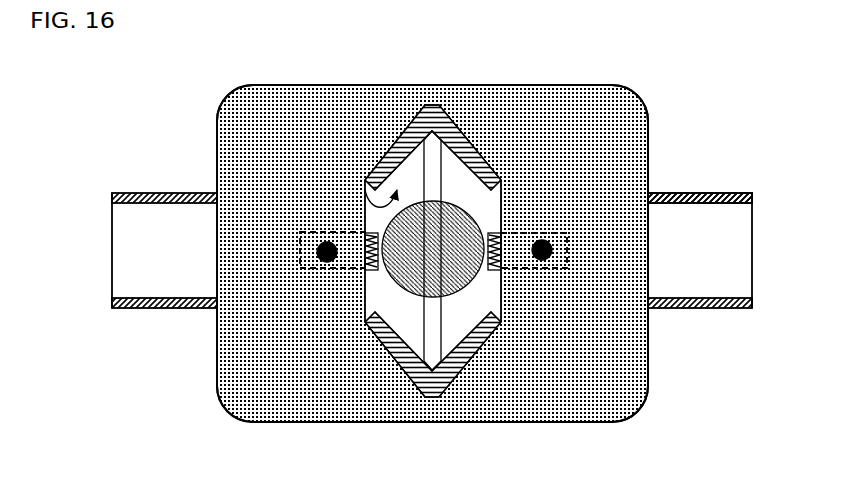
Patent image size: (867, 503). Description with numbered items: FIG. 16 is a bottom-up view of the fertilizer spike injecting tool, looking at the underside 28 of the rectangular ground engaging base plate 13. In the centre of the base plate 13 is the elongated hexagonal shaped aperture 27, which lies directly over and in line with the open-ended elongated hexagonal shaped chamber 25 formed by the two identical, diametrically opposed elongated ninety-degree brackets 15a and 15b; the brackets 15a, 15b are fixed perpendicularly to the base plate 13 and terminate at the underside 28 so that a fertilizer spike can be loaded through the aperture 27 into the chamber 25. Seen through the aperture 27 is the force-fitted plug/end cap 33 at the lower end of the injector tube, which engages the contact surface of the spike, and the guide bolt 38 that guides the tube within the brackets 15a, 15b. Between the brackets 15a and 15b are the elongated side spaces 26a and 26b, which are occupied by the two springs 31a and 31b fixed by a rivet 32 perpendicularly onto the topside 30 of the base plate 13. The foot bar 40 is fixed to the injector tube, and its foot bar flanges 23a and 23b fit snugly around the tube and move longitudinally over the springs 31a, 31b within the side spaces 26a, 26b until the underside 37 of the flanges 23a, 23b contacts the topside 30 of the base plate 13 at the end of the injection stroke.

The base plate 13 is at (357, 82).
The underside of base plate 28 is at (585, 106).
The foot bar flange 23a is at (110, 198).
The foot bar flange 23b is at (756, 198).
The underside of foot bar flanges 37 is at (706, 188).
The foot bar 40 is at (764, 262).
The elongated side space 26a is at (361, 284).
The elongated side space 26b is at (509, 287).
The bracket 15a is at (444, 391).
The bracket 15b is at (445, 113).
The guide bolt 38 is at (427, 130).
The elongated hexagonal shaped aperture 27 is at (381, 294).
The plug/end cap 33 is at (399, 290).
The chamber 25 is at (373, 232).
The topside of base plate 30 is at (502, 215).
The rivet 32 is at (320, 240).
The spring 31a is at (323, 242).
The spring 31b is at (545, 240).